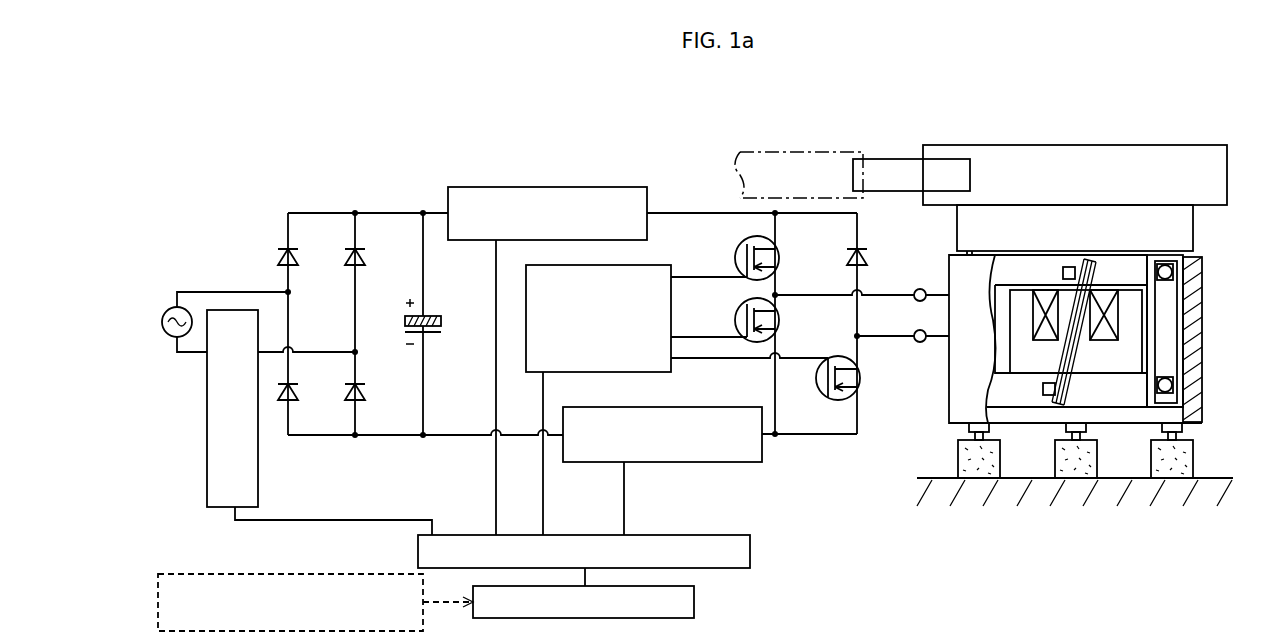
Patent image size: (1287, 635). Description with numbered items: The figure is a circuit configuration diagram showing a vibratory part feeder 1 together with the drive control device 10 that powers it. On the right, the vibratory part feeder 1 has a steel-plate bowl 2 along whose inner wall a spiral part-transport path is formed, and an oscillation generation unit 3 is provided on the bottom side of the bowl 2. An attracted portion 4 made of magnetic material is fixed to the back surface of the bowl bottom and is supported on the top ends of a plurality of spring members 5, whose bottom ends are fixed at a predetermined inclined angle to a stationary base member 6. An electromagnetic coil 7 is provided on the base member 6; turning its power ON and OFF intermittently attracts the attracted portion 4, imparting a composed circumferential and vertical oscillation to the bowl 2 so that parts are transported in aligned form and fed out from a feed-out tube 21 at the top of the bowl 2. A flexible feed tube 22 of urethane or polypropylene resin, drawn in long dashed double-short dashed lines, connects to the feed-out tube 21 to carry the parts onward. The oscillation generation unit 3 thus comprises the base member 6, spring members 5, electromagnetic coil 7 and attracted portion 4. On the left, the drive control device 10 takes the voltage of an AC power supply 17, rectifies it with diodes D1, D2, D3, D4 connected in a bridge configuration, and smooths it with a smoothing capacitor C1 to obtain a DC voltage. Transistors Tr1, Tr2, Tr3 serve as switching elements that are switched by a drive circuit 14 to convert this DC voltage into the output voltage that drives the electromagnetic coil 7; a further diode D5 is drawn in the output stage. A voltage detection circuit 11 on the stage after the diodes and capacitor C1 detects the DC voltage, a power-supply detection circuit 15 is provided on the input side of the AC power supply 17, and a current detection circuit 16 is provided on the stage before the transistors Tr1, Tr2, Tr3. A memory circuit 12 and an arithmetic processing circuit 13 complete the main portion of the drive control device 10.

The vibratory part feeder 1 is at (1007, 127).
The bowl 2 is at (1193, 229).
The oscillation generation unit 3 is at (1184, 313).
The attracted portion 4 is at (1120, 262).
The spring members 5 is at (1168, 346).
The base member 6 is at (1043, 415).
The electromagnetic coil 7 is at (1043, 338).
The drive control device 10 is at (675, 170).
The voltage detection circuit 11 is at (536, 187).
The memory circuit 12 is at (694, 602).
The arithmetic processing circuit 13 is at (750, 552).
The drive circuit 14 is at (668, 265).
The power-supply detection circuit 15 is at (207, 424).
The current detection circuit 16 is at (685, 462).
The AC power supply 17 is at (168, 311).
The feed-out tube 21 is at (896, 159).
The flexible feed tube 22 is at (801, 150).
The smoothing capacitor C1 is at (427, 315).
The rectifier diode D1 is at (302, 259).
The rectifier diode D2 is at (302, 394).
The rectifier diode D3 is at (369, 259).
The rectifier diode D4 is at (369, 394).
The diode D5 is at (871, 259).
The transistor Tr1 is at (773, 258).
The transistor Tr2 is at (773, 320).
The transistor Tr3 is at (854, 378).